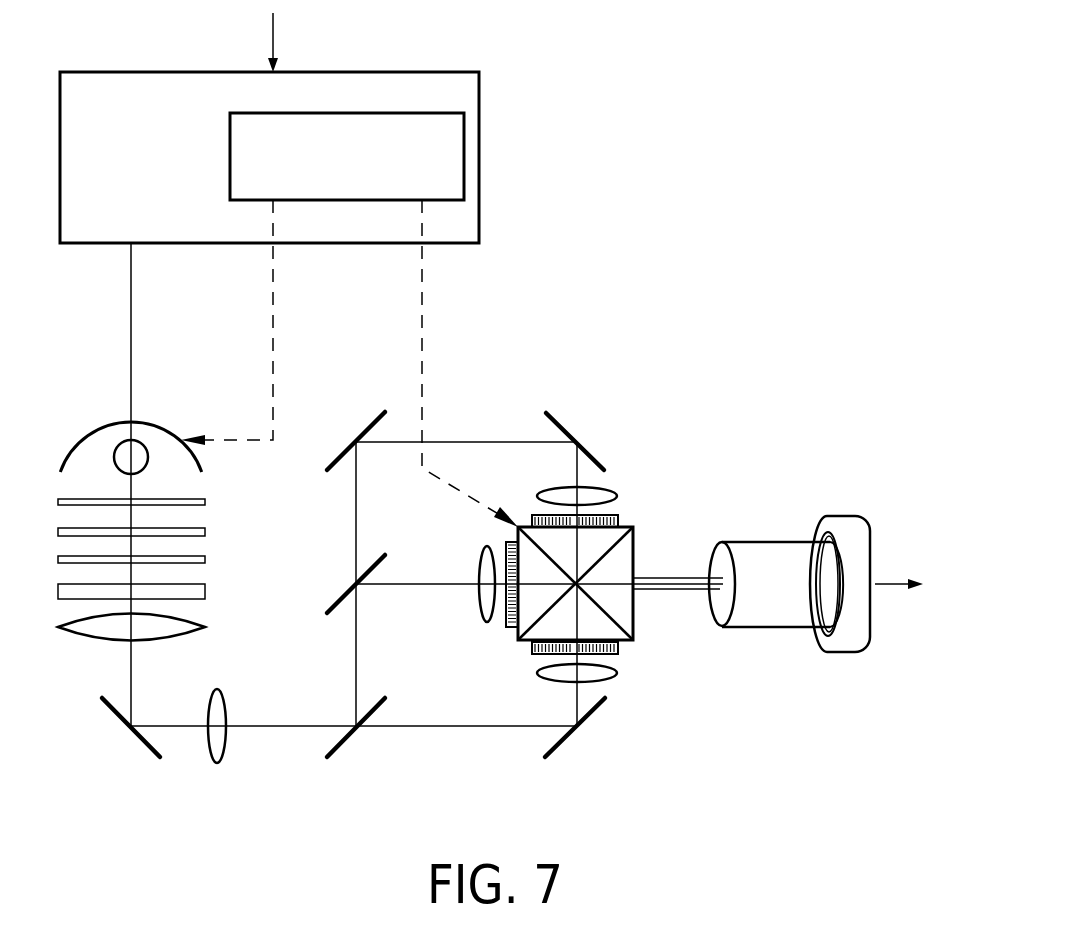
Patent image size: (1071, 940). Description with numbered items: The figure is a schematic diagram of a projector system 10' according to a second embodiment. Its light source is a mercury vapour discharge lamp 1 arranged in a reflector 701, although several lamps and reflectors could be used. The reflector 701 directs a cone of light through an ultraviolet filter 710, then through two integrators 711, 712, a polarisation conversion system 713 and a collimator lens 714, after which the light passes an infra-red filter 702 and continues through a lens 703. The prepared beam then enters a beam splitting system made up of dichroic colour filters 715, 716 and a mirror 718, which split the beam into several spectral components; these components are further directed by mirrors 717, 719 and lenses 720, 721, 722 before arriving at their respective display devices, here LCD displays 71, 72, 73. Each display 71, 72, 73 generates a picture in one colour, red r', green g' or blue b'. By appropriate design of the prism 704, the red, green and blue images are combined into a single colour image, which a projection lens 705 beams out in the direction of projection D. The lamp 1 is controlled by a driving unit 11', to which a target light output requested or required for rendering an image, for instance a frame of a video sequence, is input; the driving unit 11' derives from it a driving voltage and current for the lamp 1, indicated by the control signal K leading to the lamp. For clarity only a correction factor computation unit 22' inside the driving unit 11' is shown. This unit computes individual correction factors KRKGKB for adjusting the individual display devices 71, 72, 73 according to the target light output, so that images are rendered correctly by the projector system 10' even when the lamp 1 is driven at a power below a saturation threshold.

The projector system 10' is at (744, 119).
The driving unit 11' is at (269, 157).
The correction factor computation unit 22' is at (347, 156).
The mercury vapour discharge lamp 1 is at (138, 455).
The reflector 701 is at (108, 422).
The infra-red filter 702 is at (143, 745).
The lens 703 is at (217, 753).
The prism 704 is at (522, 540).
The projection lens 705 is at (780, 617).
The ultraviolet filter 710 is at (205, 502).
The integrator 711 is at (205, 532).
The integrator 712 is at (205, 560).
The polarisation conversion system 713 is at (205, 591).
The collimator lens 714 is at (205, 625).
The dichroic colour filter 715 is at (340, 745).
The dichroic colour filter 716 is at (343, 607).
The mirror 717 is at (562, 745).
The mirror 718 is at (348, 452).
The mirror 719 is at (563, 428).
The lens 720 is at (617, 488).
The lens 721 is at (483, 606).
The lens 722 is at (615, 673).
The LCD display 71 is at (618, 648).
The LCD display 72 is at (507, 628).
The LCD display 73 is at (620, 519).
The lamp control signal K is at (273, 325).
The correction factors K_R, K_G, K_B KRKGKB is at (422, 325).
The blue b' is at (678, 551).
The green g' is at (678, 609).
The red r' is at (676, 613).
The direction of projection D is at (893, 588).